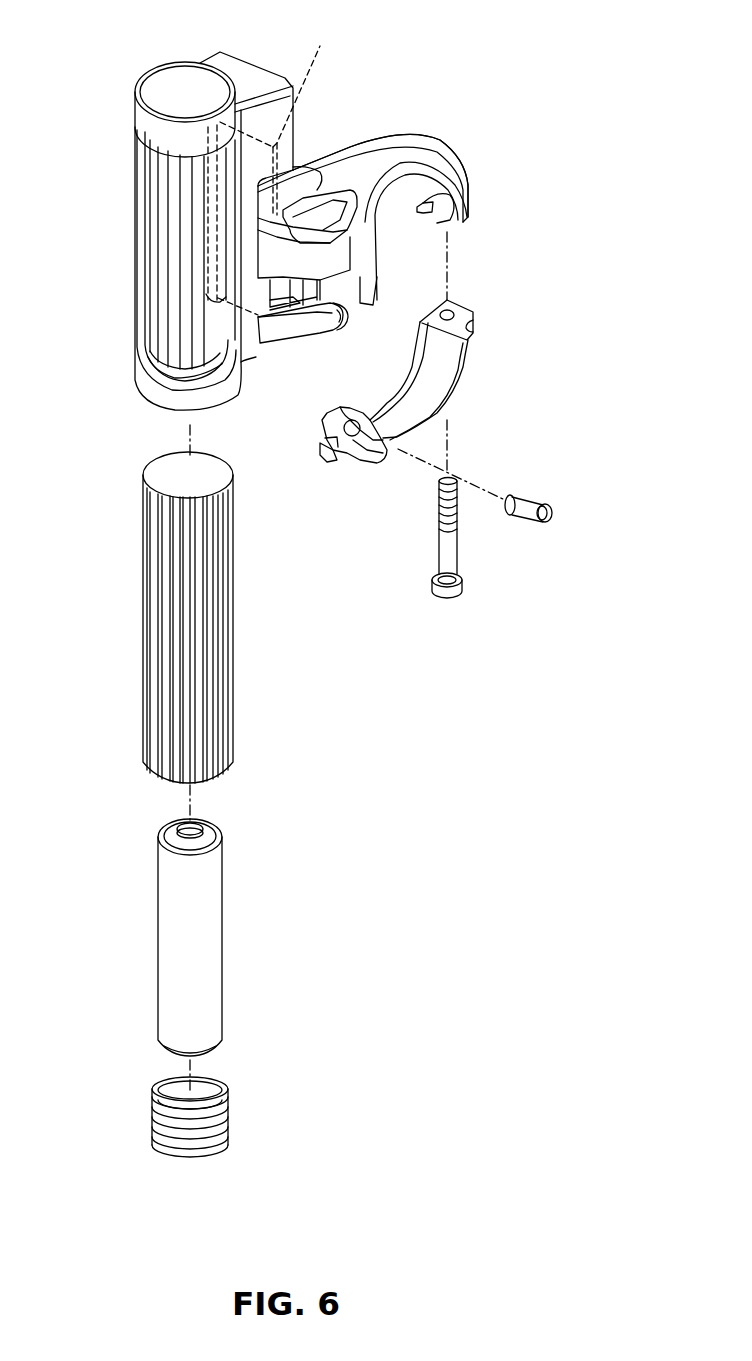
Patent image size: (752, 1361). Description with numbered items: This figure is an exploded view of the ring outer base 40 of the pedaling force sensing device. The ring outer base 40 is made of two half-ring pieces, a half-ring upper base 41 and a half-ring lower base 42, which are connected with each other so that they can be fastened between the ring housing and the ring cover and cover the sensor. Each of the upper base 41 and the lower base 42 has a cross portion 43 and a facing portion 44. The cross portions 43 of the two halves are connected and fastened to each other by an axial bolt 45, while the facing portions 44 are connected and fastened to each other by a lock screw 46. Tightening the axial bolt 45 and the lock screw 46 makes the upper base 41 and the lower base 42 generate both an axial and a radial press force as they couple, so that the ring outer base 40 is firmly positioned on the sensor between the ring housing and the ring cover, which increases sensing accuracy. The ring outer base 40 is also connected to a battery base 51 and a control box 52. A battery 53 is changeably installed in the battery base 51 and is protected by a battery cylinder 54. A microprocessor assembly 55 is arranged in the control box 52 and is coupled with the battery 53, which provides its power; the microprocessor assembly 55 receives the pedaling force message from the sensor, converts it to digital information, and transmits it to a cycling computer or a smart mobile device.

The ring outer base 40 is at (432, 136).
The half-ring upper base 41 is at (387, 150).
The half-ring lower base 42 is at (363, 467).
The cross portion 43 is at (348, 317).
The facing portion 44 is at (455, 228).
The axial bolt 45 is at (542, 505).
The lock screw 46 is at (450, 555).
The battery base 51 is at (172, 82).
The control box 52 is at (238, 65).
The battery 53 is at (200, 897).
The battery cylinder 54 is at (147, 602).
The microprocessor assembly 55 is at (300, 85).